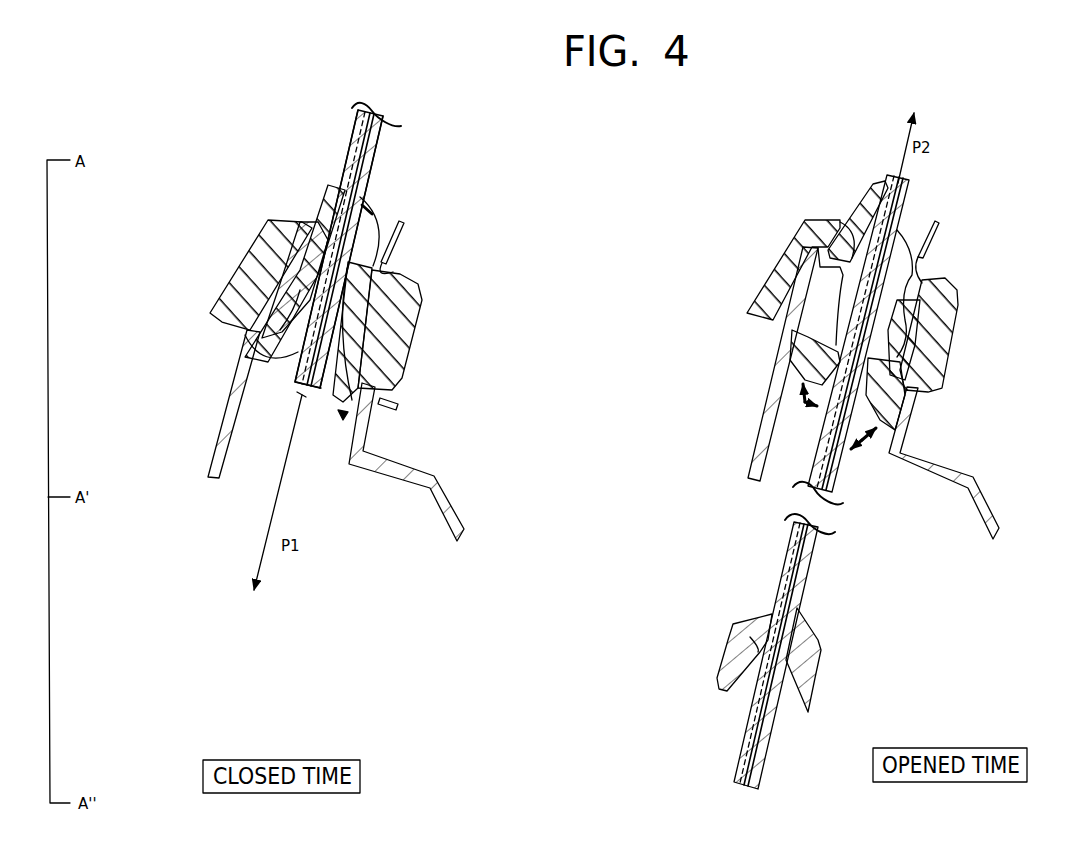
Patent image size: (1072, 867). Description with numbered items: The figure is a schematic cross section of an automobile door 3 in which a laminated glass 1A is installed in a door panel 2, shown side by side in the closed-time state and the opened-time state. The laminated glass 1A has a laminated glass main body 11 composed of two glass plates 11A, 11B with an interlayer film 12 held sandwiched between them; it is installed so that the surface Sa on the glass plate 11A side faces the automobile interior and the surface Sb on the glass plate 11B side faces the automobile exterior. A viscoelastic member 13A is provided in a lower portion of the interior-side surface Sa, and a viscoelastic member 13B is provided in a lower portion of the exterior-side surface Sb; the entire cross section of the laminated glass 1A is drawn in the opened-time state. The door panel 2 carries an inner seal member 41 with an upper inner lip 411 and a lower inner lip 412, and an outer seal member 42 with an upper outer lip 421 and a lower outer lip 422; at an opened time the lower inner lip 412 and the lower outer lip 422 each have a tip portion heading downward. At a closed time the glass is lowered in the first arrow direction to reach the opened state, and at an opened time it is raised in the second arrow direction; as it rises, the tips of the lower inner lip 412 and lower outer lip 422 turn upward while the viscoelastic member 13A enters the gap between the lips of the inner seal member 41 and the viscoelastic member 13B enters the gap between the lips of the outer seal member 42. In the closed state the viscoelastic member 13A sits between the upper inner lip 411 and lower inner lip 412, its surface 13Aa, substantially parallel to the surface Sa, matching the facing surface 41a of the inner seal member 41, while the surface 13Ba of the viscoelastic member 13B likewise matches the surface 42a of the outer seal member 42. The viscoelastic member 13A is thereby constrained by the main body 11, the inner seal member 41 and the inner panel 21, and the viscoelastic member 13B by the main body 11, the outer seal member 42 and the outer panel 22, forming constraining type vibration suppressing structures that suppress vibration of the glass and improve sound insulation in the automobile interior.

The laminated glass 1A is at (577, 443).
The door panel 2 is at (568, 347).
The automobile door 3 is at (593, 442).
The laminated glass main body 11 is at (602, 446).
The glass plate 11A is at (770, 733).
The glass plate 11B is at (747, 735).
The interlayer film 12 is at (760, 757).
The viscoelastic member 13A is at (635, 466).
The surface 13Aa is at (382, 278).
The viscoelastic member 13B is at (508, 434).
The surface 13Ba is at (483, 423).
The inner panel 21 is at (398, 468).
The outer panel 22 is at (228, 402).
The inner seal member 41 is at (646, 318).
The surface 41a is at (410, 360).
The upper inner lip 411 is at (373, 215).
The lower inner lip 412 is at (340, 377).
The outer seal member 42 is at (529, 283).
The surface 42a is at (825, 287).
The upper outer lip 421 is at (323, 200).
The lower outer lip 422 is at (290, 343).
The surface Sa is at (373, 182).
The surface Sb is at (353, 142).